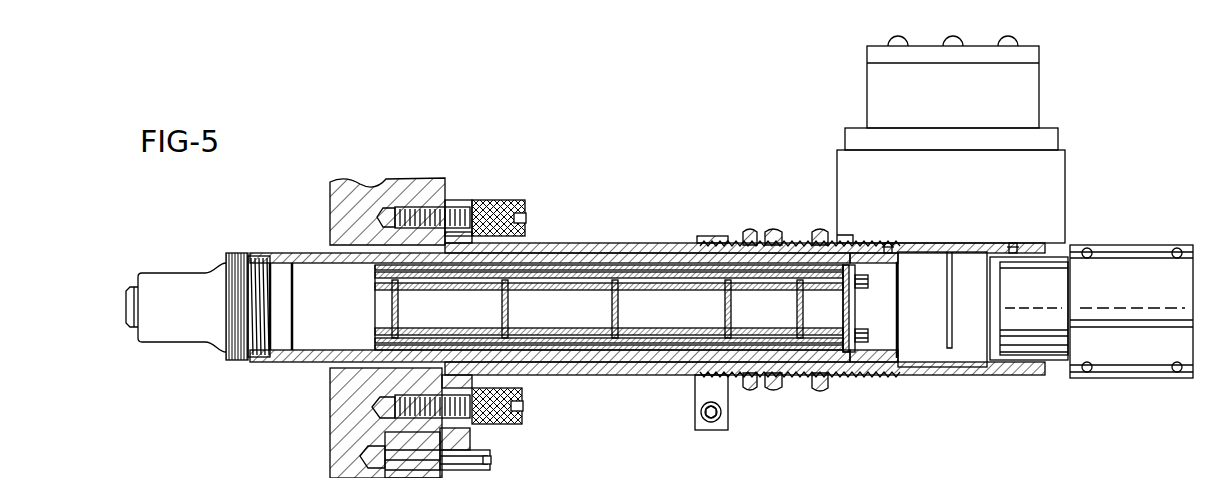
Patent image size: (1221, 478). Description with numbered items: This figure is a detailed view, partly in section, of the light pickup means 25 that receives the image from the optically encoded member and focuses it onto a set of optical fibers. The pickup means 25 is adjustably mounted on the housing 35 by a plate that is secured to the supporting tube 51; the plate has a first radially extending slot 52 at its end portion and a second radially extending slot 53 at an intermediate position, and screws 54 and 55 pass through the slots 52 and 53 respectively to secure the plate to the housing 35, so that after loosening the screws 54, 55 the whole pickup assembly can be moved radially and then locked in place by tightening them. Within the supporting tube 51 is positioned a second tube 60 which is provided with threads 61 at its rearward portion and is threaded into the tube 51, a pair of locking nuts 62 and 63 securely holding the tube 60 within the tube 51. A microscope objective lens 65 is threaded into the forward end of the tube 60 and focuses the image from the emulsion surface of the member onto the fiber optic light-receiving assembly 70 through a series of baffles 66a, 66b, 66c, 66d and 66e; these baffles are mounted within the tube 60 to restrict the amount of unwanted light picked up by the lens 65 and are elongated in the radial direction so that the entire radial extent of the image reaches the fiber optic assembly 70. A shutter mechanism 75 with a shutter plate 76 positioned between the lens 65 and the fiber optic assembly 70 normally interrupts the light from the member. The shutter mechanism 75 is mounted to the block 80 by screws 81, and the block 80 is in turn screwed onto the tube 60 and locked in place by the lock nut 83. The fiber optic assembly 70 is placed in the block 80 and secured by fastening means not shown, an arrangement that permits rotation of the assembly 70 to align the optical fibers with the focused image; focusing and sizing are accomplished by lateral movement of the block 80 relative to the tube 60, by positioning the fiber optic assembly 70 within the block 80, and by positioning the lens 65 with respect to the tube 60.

The light pickup means 25 is at (617, 212).
The housing 35 is at (372, 180).
The supporting tube 51 is at (605, 368).
The first radially extending slot 52 is at (468, 206).
The second radially extending slot 53 is at (440, 434).
The screw 54 is at (513, 200).
The screw 55 is at (521, 422).
The second tube 60 is at (300, 253).
The threads 61 is at (800, 243).
The locking nut 62 is at (748, 228).
The locking nut 63 is at (773, 228).
The microscope objective lens 65 is at (185, 340).
The baffle 66a is at (398, 302).
The baffle 66b is at (508, 302).
The baffle 66c is at (618, 302).
The baffle 66d is at (731, 302).
The baffle 66e is at (845, 300).
The fiber optic light-receiving assembly 70 is at (1055, 365).
The shutter mechanism 75 is at (1060, 170).
The shutter plate 76 is at (950, 350).
The block 80 is at (885, 378).
The screw 81 is at (888, 243).
The lock nut 83 is at (818, 392).